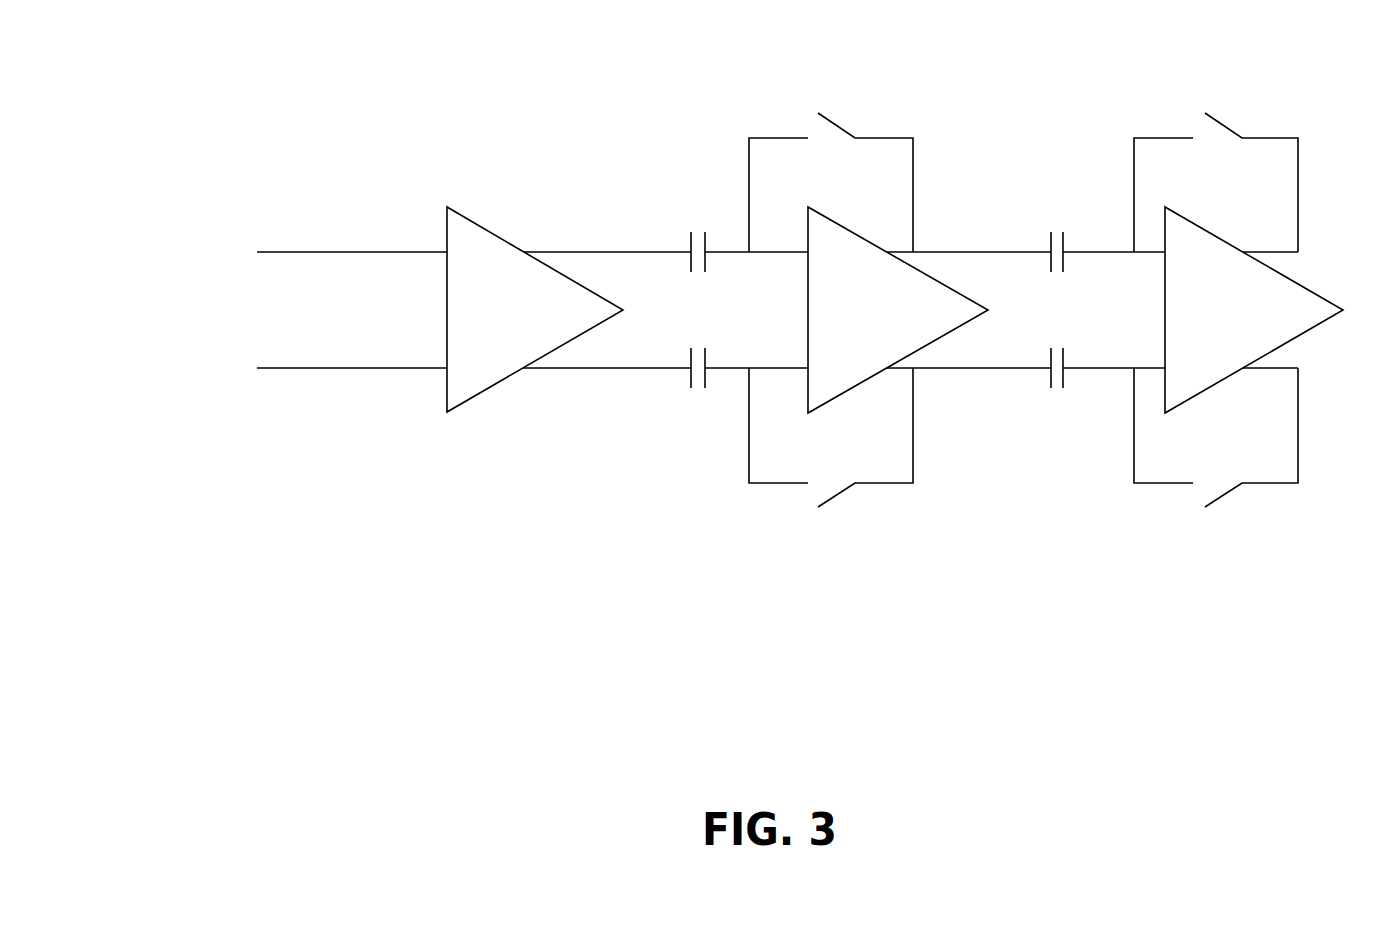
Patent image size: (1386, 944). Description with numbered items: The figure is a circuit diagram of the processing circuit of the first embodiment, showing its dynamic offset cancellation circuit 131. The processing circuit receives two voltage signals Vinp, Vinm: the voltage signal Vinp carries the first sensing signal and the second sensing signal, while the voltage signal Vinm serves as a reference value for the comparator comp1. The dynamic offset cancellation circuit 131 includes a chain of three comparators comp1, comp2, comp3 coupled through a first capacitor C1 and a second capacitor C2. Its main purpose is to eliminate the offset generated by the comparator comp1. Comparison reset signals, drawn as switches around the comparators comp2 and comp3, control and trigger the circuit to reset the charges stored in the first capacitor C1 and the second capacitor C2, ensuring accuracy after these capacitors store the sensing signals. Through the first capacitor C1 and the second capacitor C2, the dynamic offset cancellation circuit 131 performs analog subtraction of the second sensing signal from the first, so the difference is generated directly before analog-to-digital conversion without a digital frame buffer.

The dynamic offset cancellation circuit 131 is at (168, 77).
The voltage signal Vinp is at (314, 247).
The voltage signal Vinm is at (308, 364).
The comparator comp1 is at (569, 309).
The first capacitor C1 is at (738, 289).
The comparator comp2 is at (929, 310).
The second capacitor C2 is at (1096, 289).
The comparator comp3 is at (1254, 310).